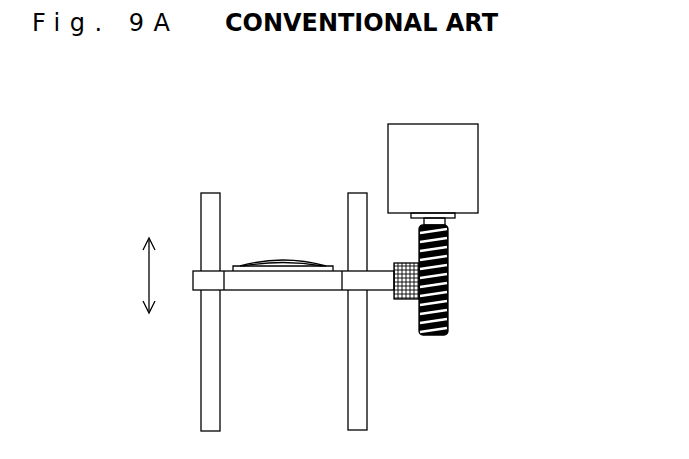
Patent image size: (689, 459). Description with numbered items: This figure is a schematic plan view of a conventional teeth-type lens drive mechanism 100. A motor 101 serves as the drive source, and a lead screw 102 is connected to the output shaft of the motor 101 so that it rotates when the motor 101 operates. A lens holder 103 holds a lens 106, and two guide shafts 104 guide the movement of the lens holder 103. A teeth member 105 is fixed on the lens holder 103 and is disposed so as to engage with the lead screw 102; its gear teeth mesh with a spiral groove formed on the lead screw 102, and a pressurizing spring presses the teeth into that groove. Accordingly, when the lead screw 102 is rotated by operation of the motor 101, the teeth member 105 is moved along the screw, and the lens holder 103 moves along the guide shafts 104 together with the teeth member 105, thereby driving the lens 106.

The lens drive mechanism 100 is at (197, 157).
The motor 101 is at (473, 165).
The lead screw 102 is at (447, 280).
The lens holder 103 is at (293, 290).
The guide shafts 104 is at (207, 410).
The teeth member 105 is at (402, 300).
The lens 106 is at (277, 263).